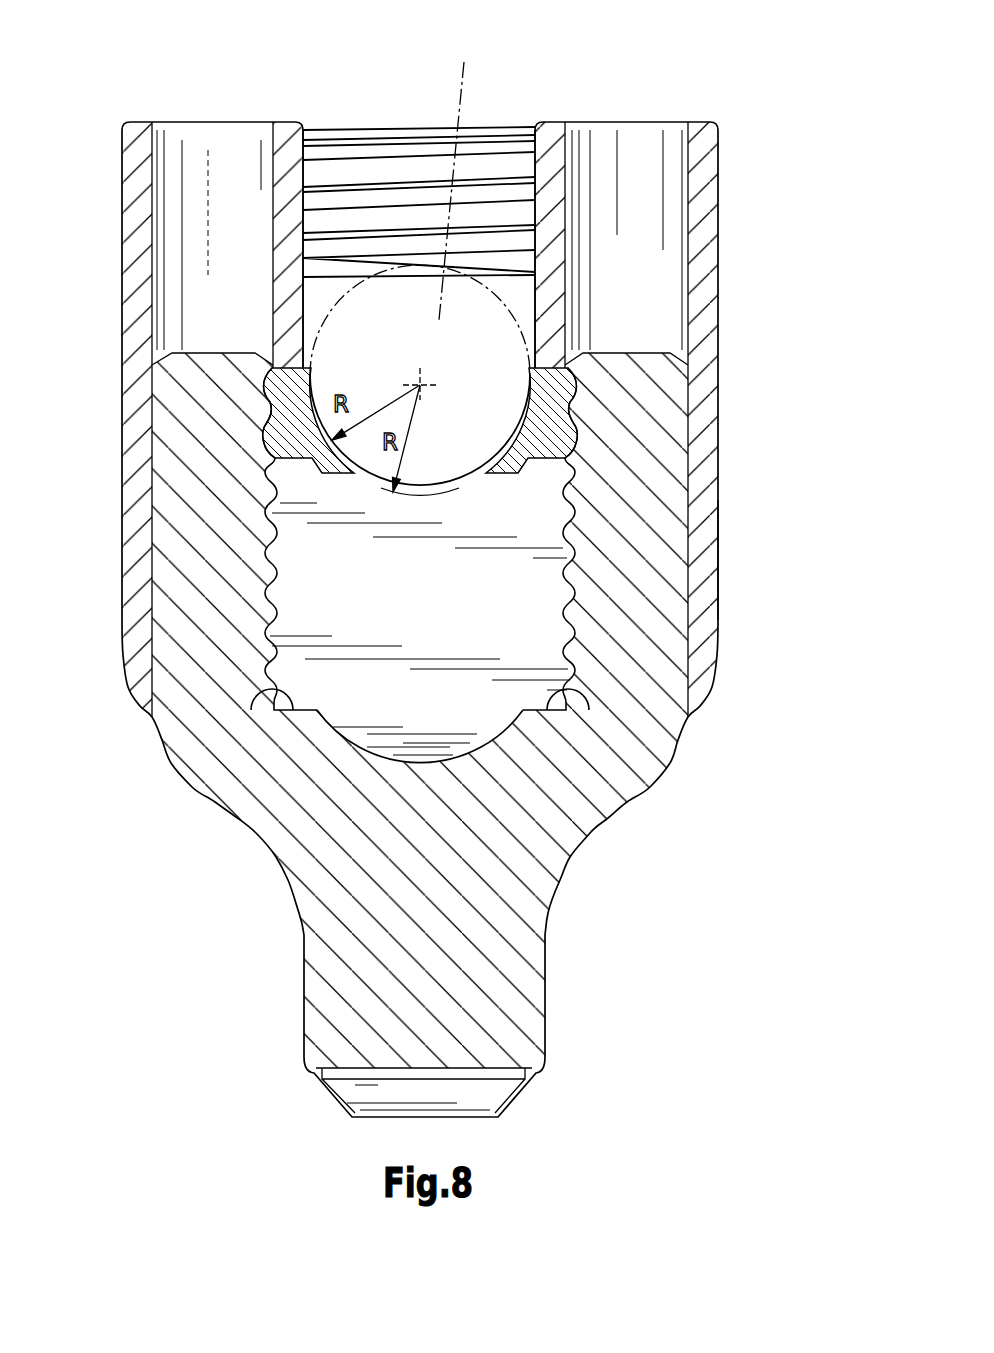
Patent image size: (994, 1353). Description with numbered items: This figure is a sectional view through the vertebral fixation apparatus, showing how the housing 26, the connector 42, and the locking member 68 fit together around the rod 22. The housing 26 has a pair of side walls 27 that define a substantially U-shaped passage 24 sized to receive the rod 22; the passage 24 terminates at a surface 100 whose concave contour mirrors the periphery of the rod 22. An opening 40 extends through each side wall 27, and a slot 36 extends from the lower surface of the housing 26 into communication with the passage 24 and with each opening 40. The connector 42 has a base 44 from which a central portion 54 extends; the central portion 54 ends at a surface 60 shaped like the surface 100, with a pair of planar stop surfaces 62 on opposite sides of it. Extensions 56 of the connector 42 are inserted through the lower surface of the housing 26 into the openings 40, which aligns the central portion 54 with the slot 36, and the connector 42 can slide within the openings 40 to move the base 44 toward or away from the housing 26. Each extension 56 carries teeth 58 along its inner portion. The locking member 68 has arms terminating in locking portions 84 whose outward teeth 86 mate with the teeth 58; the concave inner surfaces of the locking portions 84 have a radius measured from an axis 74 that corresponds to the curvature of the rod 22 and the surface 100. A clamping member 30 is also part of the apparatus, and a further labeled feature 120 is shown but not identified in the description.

The rod 22 is at (455, 179).
The passage 24 is at (511, 278).
The housing 26 is at (736, 591).
The side walls 27 is at (120, 234).
The clamping member 30 is at (387, 168).
The slot 36 is at (295, 348).
The opening 40 is at (223, 146).
The connector 42 is at (561, 984).
The base 44 is at (480, 1092).
The central portion 54 is at (402, 812).
The extensions 56 is at (197, 576).
The teeth 58 is at (268, 416).
The surface 60 is at (478, 812).
The planar stop surfaces 62 is at (272, 698).
The locking member 68 is at (562, 429).
The axis 74 is at (414, 368).
The locking portion 84 is at (278, 407).
The teeth 86 is at (272, 412).
The surface 100 is at (430, 493).
The spherical contact surface 120 is at (490, 457).